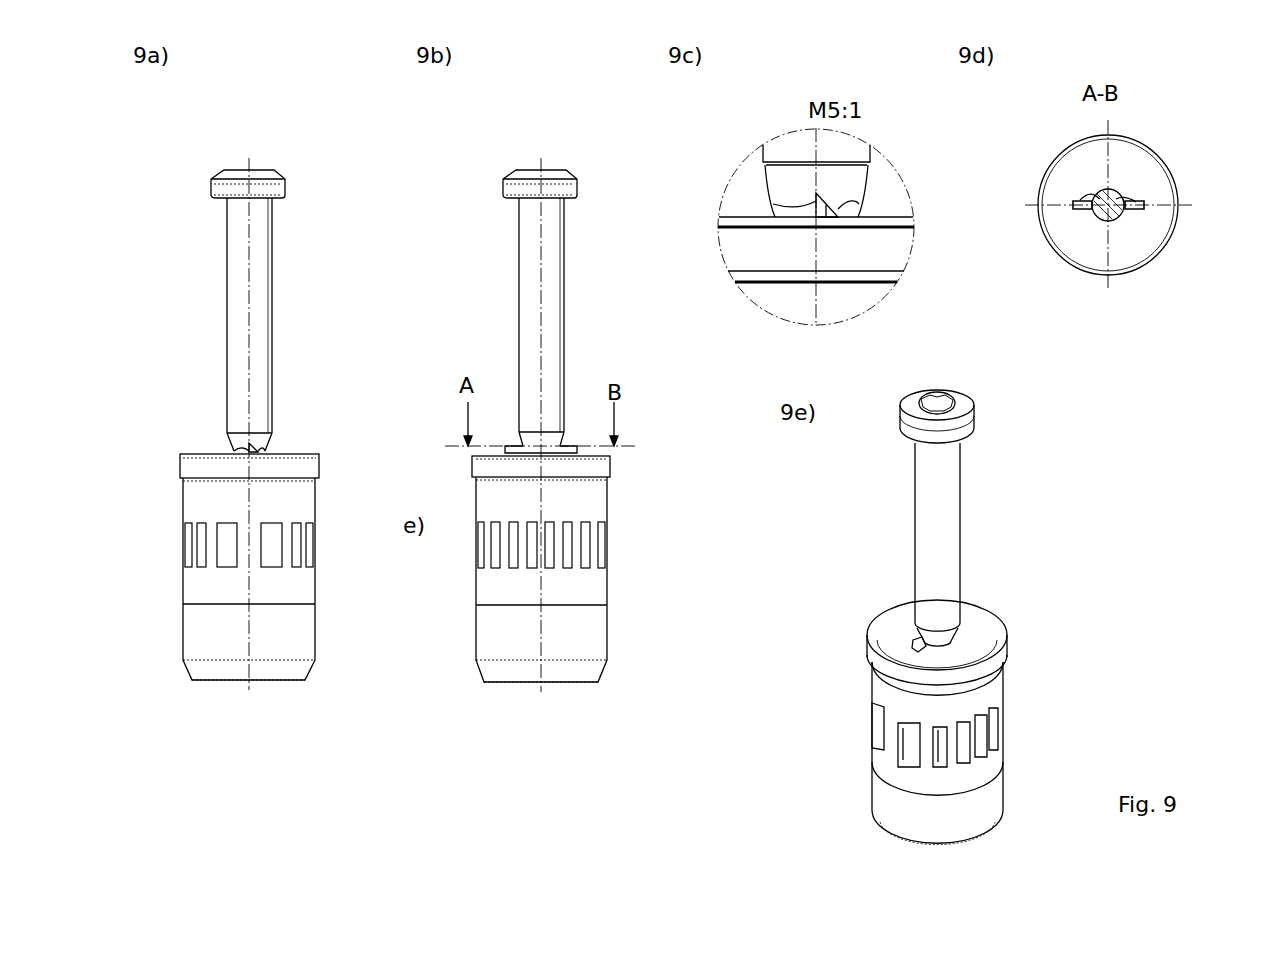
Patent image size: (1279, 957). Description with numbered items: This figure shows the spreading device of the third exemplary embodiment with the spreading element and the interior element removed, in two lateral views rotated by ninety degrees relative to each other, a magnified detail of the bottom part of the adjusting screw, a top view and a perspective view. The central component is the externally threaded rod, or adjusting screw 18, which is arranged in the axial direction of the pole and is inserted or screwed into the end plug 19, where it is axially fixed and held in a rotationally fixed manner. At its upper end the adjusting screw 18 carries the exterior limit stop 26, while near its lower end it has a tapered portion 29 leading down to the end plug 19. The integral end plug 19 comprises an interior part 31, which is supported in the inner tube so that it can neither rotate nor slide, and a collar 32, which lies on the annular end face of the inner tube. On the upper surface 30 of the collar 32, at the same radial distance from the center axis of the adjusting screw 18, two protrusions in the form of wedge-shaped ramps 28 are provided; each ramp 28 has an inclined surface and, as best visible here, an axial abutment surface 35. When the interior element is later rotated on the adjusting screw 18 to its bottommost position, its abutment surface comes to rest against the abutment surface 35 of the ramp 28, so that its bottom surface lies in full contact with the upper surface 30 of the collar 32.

The externally threaded rod, adjusting screw 18 is at (258, 288).
The end plug 19 is at (207, 583).
The exterior limit stop 26 is at (262, 172).
The ramp on collar of end plug 28 is at (262, 450).
The tapered portion of adjusting screw 29 is at (235, 443).
The upper surface of collar 30 is at (310, 456).
The interior part of end plug 31 is at (283, 583).
The collar of end plug 32 is at (300, 463).
The axial abutment surface of ramp on collar 35 is at (238, 451).